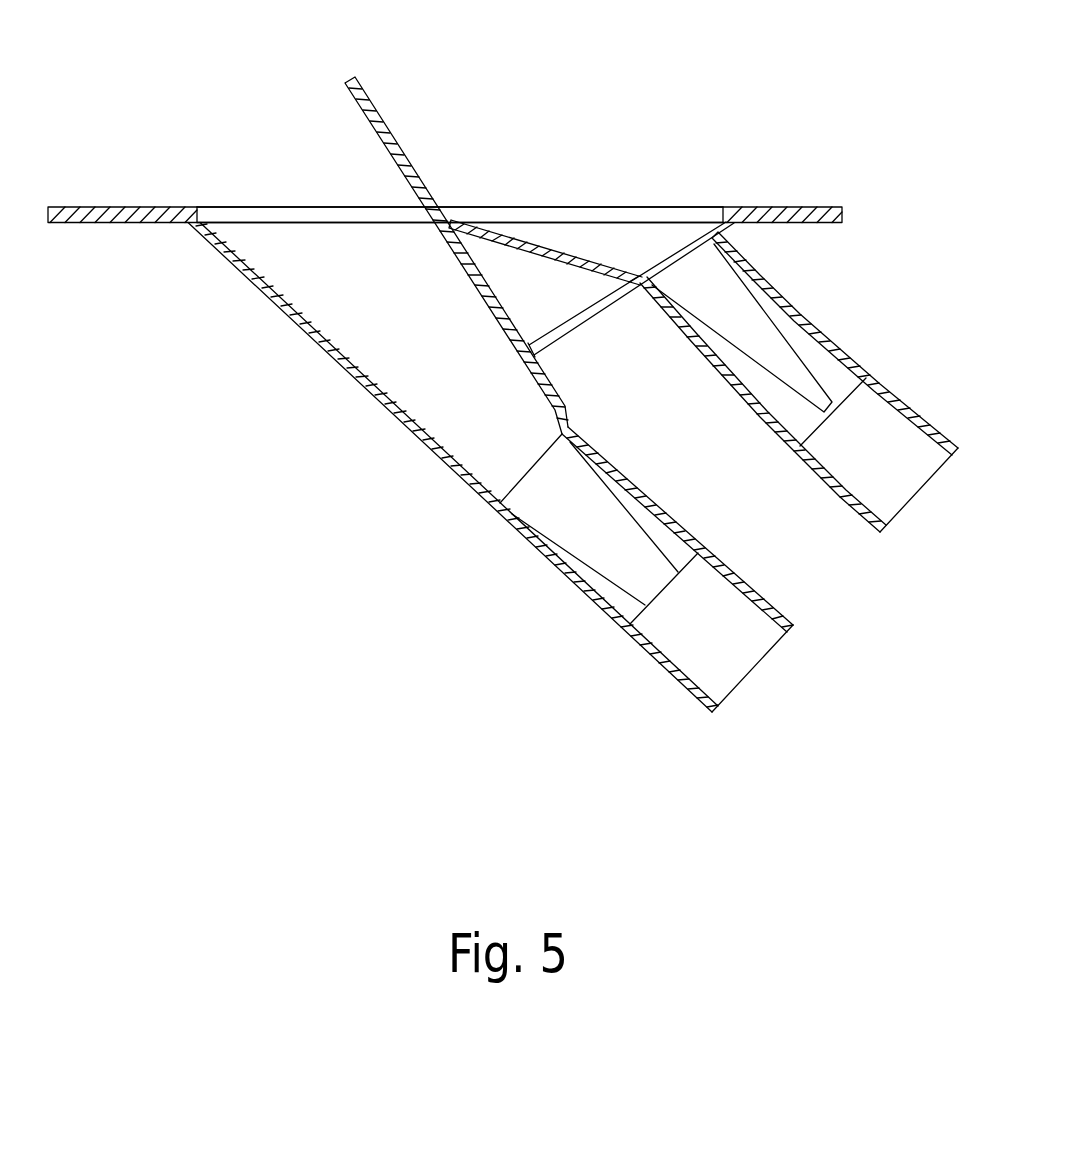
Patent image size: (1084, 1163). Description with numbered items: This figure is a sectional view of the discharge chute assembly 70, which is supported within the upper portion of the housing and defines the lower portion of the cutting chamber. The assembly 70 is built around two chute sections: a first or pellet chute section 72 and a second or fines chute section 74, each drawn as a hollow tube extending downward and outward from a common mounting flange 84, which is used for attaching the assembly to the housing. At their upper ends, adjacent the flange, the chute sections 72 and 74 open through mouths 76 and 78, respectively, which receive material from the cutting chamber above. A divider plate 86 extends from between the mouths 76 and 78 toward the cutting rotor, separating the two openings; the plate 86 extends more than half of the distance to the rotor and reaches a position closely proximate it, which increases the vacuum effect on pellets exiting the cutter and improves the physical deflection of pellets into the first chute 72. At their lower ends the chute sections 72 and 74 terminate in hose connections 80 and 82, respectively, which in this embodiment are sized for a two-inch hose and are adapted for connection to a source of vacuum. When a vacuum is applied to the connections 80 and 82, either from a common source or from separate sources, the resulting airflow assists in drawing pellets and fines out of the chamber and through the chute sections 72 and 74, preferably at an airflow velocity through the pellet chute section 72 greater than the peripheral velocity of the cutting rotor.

The discharge chute assembly 70 is at (748, 130).
The pellet chute section 72 is at (390, 418).
The fines chute section 74 is at (817, 303).
The mouth 76 is at (305, 250).
The mouth 78 is at (612, 237).
The hose connection 80 is at (720, 650).
The hose connection 82 is at (885, 477).
The mounting flange 84 is at (806, 209).
The divider plate 86 is at (405, 160).